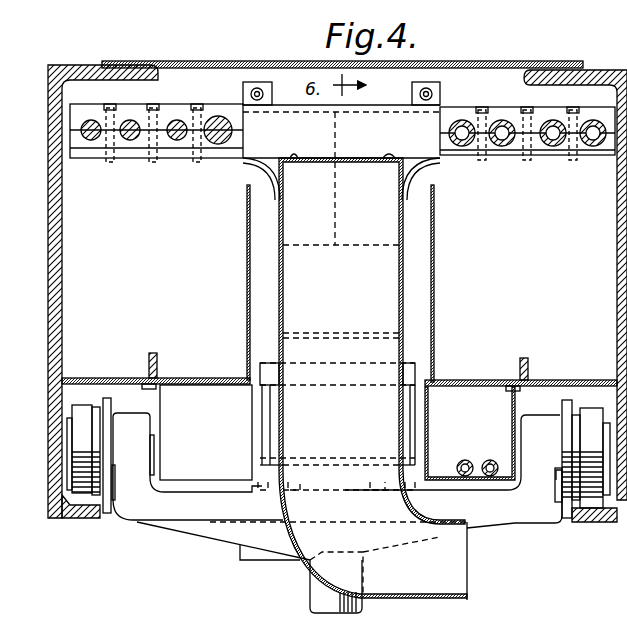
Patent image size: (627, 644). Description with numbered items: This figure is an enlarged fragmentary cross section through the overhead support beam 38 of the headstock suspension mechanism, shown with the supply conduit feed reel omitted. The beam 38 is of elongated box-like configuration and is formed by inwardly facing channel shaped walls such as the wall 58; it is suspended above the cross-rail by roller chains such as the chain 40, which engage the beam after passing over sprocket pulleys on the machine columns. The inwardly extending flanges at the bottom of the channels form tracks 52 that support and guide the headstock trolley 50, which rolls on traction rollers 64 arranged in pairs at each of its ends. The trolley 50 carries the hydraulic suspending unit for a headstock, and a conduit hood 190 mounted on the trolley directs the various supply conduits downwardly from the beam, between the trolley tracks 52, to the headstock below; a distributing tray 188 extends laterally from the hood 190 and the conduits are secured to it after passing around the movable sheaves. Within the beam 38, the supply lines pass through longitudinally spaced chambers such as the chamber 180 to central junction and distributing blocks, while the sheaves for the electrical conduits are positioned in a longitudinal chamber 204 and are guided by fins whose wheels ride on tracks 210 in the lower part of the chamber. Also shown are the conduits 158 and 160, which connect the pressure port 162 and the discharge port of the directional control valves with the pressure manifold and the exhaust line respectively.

The support beam 38 is at (72, 526).
The roller chain 40 is at (270, 418).
The trolley 50 is at (195, 518).
The track 52 is at (92, 512).
The channel shaped wall 58 is at (62, 233).
The traction roller 64 is at (82, 466).
The conduit 158 is at (497, 477).
The conduit 160 is at (453, 477).
The pressure port 162 is at (490, 444).
The chamber 180 is at (198, 405).
The distributing tray 188 is at (430, 118).
The conduit hood 190 is at (300, 566).
The longitudinal chamber 204 is at (158, 269).
The track 210 is at (156, 353).